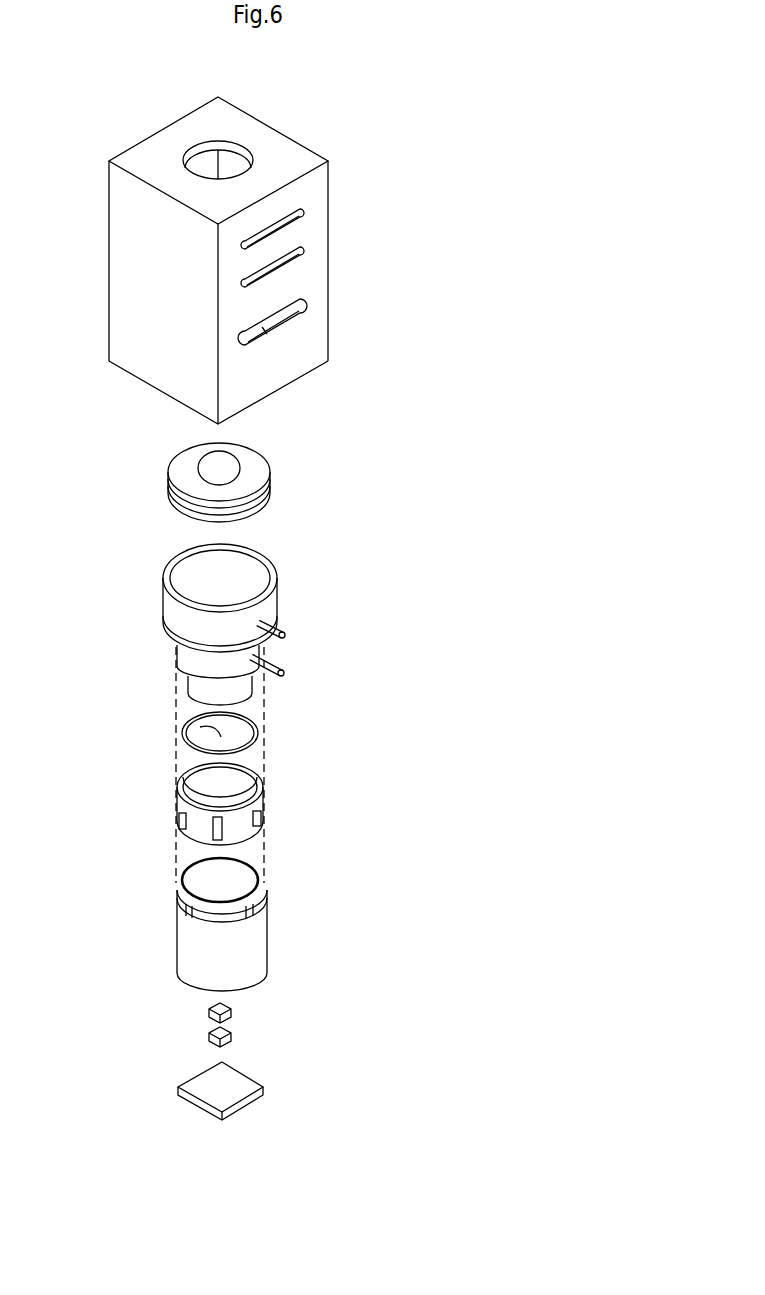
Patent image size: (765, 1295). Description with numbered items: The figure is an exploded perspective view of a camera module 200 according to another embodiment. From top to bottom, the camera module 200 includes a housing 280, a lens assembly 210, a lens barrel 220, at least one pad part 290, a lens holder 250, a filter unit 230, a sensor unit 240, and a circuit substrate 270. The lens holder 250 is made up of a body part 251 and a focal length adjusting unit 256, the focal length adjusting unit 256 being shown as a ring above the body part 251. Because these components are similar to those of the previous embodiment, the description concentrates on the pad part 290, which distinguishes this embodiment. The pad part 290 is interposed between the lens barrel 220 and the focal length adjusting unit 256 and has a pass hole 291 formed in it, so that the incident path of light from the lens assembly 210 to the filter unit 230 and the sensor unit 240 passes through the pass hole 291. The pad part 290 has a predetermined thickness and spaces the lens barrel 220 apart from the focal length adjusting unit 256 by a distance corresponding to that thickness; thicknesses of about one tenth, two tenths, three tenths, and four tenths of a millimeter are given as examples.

The camera module 200 is at (104, 61).
The housing 280 is at (365, 155).
The lens assembly 210 is at (288, 448).
The lens barrel 220 is at (313, 584).
The pad part 290 is at (240, 733).
The pass hole 291 is at (226, 731).
The lens holder 250 is at (316, 877).
The focal length adjusting unit 256 is at (262, 818).
The body part 251 is at (255, 948).
The filter unit 230 is at (208, 1005).
The sensor unit 240 is at (208, 1030).
The circuit substrate 270 is at (197, 1085).